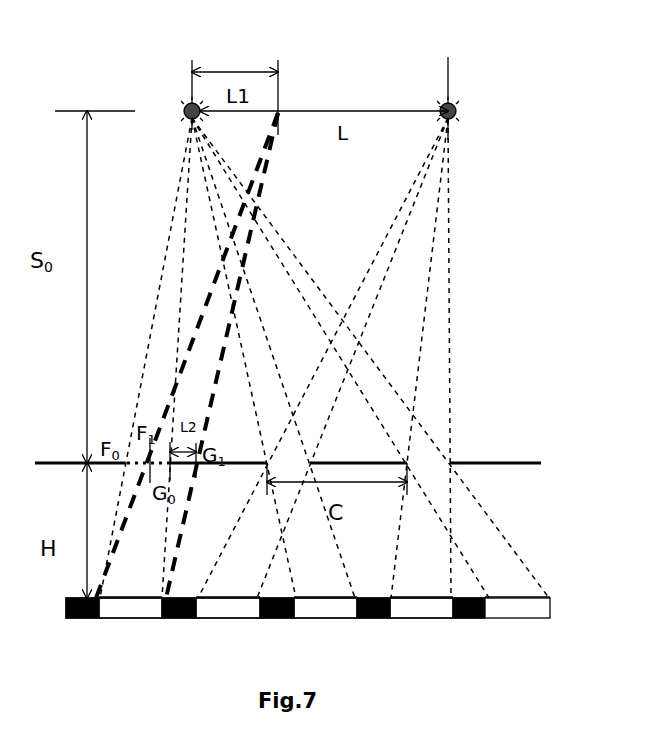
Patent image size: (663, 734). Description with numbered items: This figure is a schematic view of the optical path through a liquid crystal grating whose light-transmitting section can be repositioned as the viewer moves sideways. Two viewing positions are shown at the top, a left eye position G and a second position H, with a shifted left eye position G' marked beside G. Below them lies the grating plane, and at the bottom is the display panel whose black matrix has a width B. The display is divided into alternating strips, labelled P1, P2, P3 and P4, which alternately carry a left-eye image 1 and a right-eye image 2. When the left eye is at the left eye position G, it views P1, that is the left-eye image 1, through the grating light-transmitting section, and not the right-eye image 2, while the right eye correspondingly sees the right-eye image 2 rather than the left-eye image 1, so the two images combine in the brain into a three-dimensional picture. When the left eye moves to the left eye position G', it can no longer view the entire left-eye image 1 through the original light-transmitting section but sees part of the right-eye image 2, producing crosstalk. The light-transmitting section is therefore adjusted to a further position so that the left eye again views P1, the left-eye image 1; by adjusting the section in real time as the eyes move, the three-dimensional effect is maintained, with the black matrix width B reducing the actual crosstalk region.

The left eye position G is at (192, 72).
The second light source H is at (448, 77).
The left eye position G' is at (292, 79).
The width of the black matrix B is at (308, 624).
The left-eye image P1 is at (130, 608).
The second pixel region P2 is at (228, 608).
The third pixel region P3 is at (325, 608).
The fourth pixel region P4 is at (421, 608).
The left-eye image 1 is at (324, 584).
The right-eye image 2 is at (324, 584).